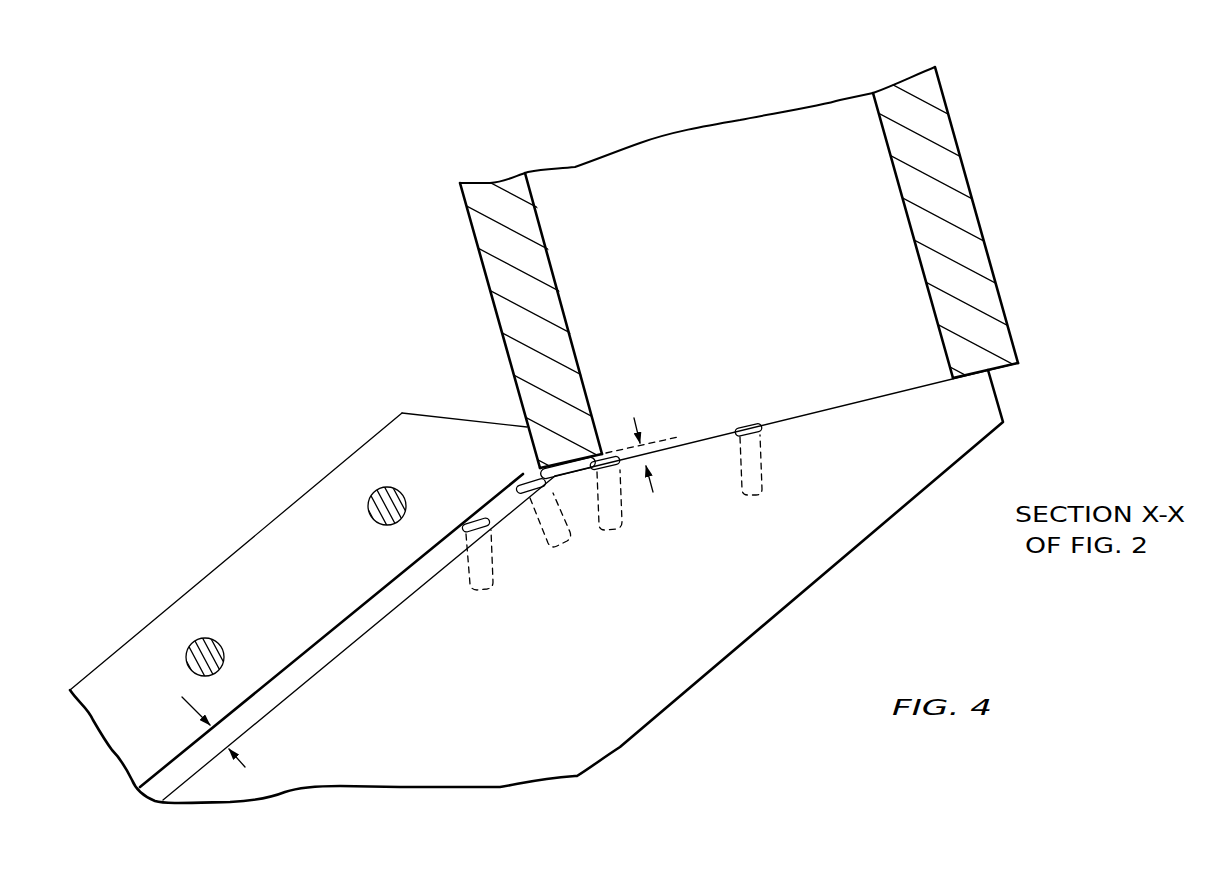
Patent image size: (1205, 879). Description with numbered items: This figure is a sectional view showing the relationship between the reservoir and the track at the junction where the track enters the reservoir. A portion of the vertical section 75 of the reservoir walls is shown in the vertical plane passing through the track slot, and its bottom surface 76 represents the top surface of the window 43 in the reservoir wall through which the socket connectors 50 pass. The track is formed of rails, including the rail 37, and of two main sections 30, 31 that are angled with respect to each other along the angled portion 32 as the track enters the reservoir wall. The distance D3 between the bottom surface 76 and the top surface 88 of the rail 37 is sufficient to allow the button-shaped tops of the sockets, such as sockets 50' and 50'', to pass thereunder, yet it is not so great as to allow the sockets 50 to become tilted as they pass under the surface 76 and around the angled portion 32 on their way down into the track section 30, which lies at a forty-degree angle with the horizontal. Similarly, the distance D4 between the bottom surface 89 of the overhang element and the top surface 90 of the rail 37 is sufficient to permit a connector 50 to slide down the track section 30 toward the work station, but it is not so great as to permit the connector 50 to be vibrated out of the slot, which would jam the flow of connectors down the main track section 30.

The vertical section of walls of reservoir 75 is at (488, 249).
The bottom surface 76 is at (575, 466).
The main track section 31 is at (878, 397).
The socket connector 50 is at (614, 497).
The socket 50' is at (613, 518).
The socket 50'' is at (500, 511).
The window 43 is at (540, 470).
The angled portion 32 is at (538, 497).
The top surface of the rail 88 is at (568, 478).
The main track section 30 is at (331, 651).
The bottom surface of the overhang element 89 is at (252, 693).
The top surface of the rail 90 is at (284, 700).
The rail 37 is at (427, 716).
The distance between bottom surface 76 and top surface 88 D3 is at (660, 470).
The distance between bottom surface 89 and top surface 90 D4 is at (191, 720).